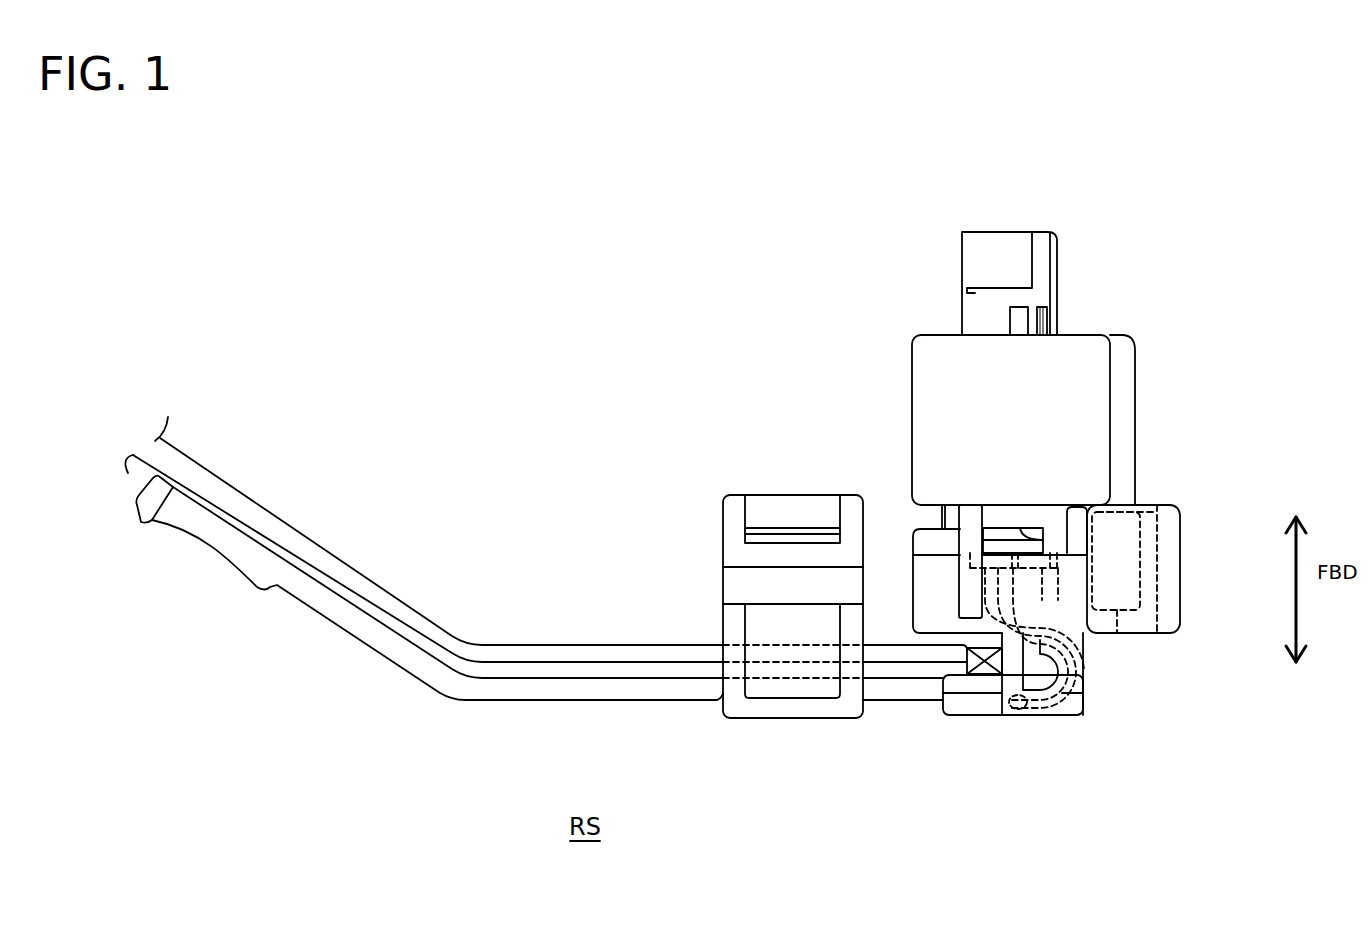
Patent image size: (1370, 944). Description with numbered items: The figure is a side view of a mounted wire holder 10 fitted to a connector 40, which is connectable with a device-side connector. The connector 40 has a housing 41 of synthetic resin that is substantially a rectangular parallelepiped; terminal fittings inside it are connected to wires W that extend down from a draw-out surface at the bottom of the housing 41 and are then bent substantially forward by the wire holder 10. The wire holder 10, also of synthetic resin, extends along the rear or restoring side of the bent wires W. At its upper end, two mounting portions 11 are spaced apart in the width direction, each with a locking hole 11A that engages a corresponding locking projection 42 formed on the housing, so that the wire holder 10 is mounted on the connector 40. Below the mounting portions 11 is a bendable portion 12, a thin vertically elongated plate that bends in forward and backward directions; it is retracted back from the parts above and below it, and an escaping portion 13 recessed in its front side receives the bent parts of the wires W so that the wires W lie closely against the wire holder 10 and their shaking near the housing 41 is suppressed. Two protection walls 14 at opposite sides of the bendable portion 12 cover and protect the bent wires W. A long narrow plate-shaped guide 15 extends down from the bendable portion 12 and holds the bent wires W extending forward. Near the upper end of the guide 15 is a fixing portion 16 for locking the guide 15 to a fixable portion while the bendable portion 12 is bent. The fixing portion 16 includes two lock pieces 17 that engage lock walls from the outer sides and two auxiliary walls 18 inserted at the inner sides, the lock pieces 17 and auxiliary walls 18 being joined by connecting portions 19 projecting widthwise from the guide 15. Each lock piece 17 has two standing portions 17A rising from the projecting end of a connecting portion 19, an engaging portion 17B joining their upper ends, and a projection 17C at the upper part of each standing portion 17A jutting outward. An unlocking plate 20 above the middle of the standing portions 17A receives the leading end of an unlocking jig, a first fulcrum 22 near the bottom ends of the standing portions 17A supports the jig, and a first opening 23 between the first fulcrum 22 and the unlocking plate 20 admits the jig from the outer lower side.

The wire holder 10 is at (1135, 700).
The mounting portion 11 is at (1023, 513).
The locking hole 11A is at (1053, 538).
The bendable portion 12 is at (1060, 707).
The escaping portion 13 is at (1012, 723).
The protection wall 14 is at (1058, 665).
The guide 15 is at (490, 690).
The fixing portion 16 is at (760, 713).
The lock piece 17 is at (767, 510).
The standing portion 17A is at (733, 620).
The engaging portion 17B is at (792, 510).
The projection 17C is at (737, 586).
The auxiliary wall 18 is at (802, 628).
The connecting portion 19 is at (725, 712).
The unlocking plate 20 is at (778, 587).
The first fulcrum 22 is at (788, 713).
The first opening 23 is at (750, 630).
The connector 40 is at (1070, 357).
The housing 41 is at (1095, 375).
The locking projection 42 is at (1000, 532).
The wire W is at (220, 483).